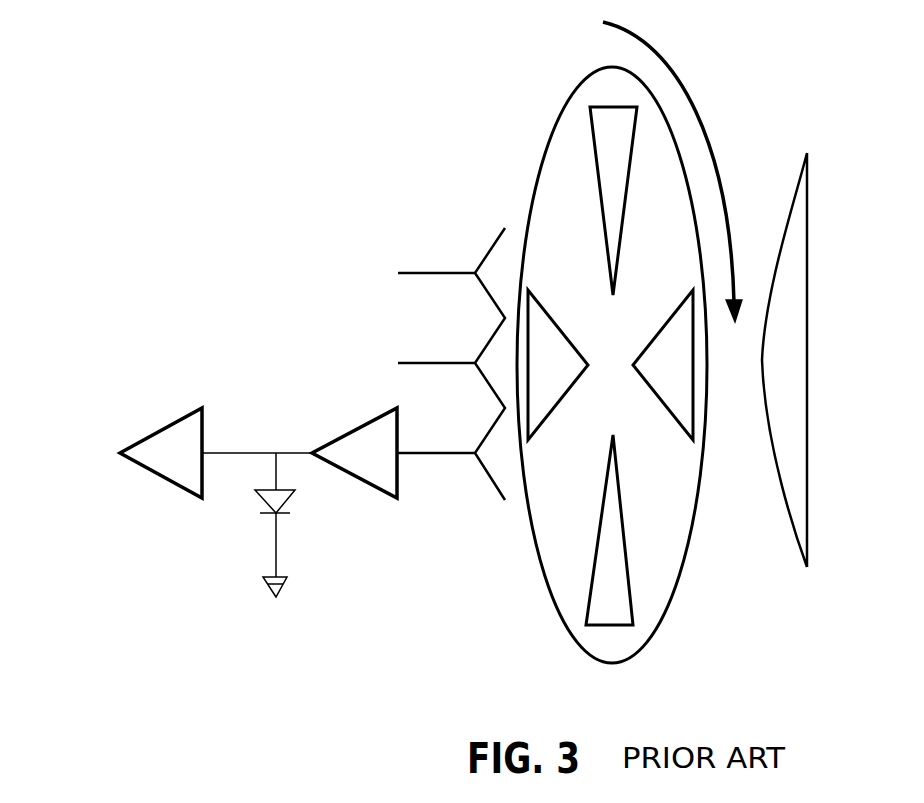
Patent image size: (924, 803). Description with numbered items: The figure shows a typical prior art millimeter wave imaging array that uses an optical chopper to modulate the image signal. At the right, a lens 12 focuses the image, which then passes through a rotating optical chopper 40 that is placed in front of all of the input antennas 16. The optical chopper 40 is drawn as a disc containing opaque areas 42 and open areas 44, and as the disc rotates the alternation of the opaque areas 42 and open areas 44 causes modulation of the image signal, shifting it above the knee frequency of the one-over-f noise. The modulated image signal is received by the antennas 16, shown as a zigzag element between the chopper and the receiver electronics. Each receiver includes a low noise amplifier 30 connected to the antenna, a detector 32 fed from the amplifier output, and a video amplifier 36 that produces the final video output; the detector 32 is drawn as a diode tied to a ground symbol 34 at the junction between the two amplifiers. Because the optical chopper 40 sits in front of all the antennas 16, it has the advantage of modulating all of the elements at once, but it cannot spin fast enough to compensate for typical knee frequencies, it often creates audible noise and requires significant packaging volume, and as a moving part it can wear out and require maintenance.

The lens 12 is at (800, 230).
The antennas 16 is at (483, 262).
The low noise amplifier 30 is at (380, 437).
The detector 32 is at (290, 497).
The ground 34 is at (263, 580).
The video amplifier 36 is at (175, 445).
The rotating optical chopper 40 is at (685, 550).
The opaque areas 42 is at (660, 148).
The open areas 44 is at (617, 583).